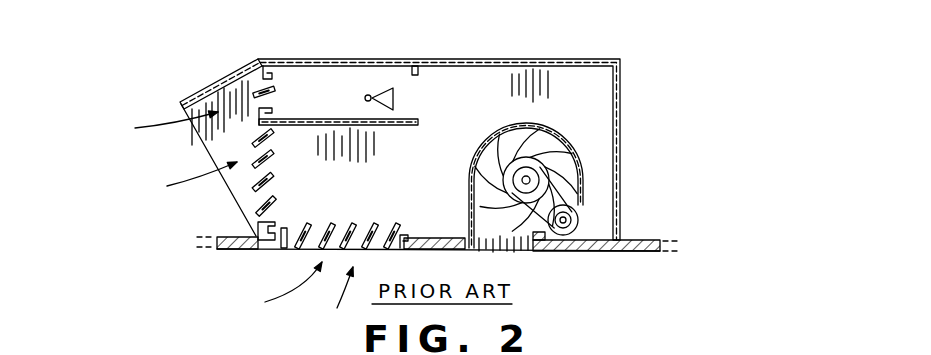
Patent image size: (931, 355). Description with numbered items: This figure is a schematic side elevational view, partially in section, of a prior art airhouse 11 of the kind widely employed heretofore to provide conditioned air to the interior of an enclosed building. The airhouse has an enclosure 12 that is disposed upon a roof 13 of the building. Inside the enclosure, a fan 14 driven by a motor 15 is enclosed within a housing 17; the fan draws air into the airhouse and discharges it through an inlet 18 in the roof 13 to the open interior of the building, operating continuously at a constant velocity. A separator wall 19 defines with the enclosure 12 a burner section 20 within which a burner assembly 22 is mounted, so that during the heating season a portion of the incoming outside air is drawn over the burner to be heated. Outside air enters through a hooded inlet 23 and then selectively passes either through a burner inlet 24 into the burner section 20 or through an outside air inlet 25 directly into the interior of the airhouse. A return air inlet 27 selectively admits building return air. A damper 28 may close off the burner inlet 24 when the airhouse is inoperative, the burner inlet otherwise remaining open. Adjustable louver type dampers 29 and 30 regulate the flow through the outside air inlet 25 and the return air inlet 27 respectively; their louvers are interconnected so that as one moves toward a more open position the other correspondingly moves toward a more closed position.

The airhouse 11 is at (667, 64).
The enclosure 12 is at (570, 63).
The roof 13 is at (643, 240).
The fan 14 is at (550, 143).
The motor 15 is at (580, 218).
The housing 17 is at (477, 142).
The inlet 18 is at (510, 244).
The separator wall 19 is at (385, 126).
The burner section 20 is at (338, 102).
The burner assembly 22 is at (393, 99).
The hooded inlet 23 is at (202, 93).
The burner inlet 24 is at (277, 80).
The outside air inlet 25 is at (227, 208).
The return air inlet 27 is at (309, 296).
The damper 28 is at (256, 89).
The louver type damper 29 is at (270, 180).
The louver type damper 30 is at (352, 227).